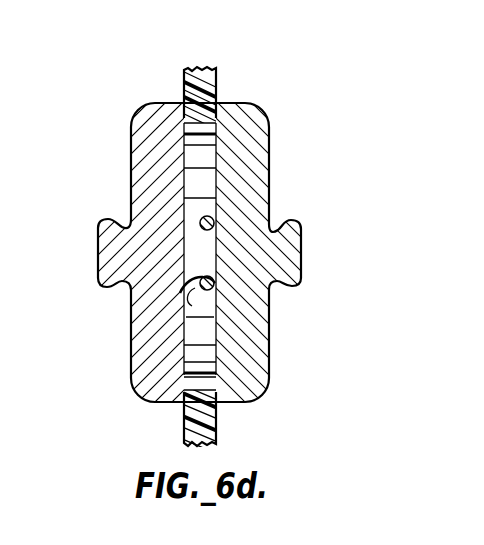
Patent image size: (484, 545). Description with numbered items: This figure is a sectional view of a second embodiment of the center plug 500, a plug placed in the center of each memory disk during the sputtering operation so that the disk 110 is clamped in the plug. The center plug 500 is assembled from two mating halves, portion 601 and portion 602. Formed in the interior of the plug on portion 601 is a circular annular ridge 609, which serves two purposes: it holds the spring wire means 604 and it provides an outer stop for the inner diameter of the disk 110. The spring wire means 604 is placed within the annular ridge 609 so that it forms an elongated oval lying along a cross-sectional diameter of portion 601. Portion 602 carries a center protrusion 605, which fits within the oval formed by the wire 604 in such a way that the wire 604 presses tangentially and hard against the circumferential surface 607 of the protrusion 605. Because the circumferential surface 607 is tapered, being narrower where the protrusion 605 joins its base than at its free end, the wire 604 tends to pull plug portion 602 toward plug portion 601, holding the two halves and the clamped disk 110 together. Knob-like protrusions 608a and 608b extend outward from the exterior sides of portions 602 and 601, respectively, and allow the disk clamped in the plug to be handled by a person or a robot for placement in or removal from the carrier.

The center plug 500 is at (142, 88).
The disk 110 is at (217, 80).
The portion of the center plug 601 is at (133, 128).
The portion of the center plug 602 is at (248, 128).
The spring wire means 604 is at (213, 218).
The center protrusion 605 is at (190, 248).
The circumferential surface 607 is at (188, 300).
The knob-like protrusion 608a is at (302, 246).
The knob-like protrusion 608b is at (97, 247).
The circular annular ridge 609 is at (214, 122).